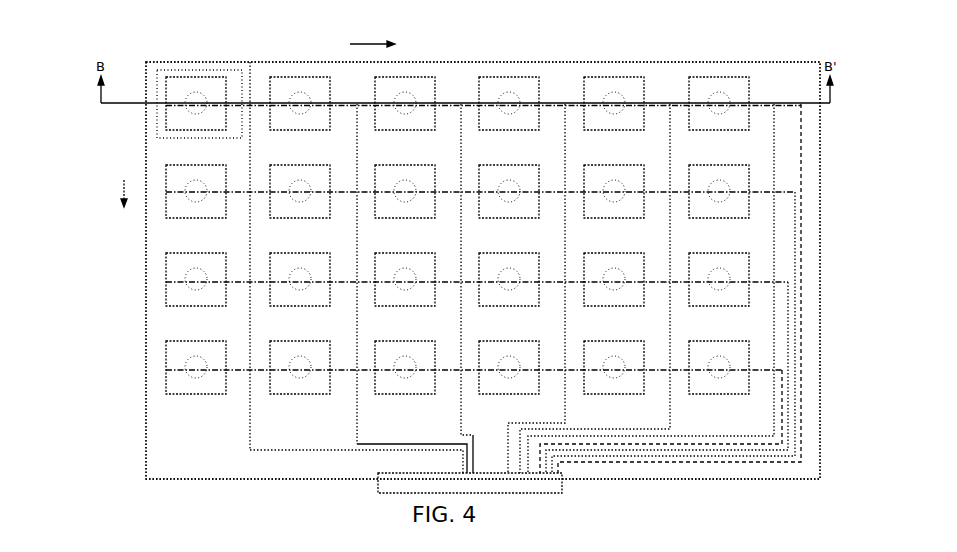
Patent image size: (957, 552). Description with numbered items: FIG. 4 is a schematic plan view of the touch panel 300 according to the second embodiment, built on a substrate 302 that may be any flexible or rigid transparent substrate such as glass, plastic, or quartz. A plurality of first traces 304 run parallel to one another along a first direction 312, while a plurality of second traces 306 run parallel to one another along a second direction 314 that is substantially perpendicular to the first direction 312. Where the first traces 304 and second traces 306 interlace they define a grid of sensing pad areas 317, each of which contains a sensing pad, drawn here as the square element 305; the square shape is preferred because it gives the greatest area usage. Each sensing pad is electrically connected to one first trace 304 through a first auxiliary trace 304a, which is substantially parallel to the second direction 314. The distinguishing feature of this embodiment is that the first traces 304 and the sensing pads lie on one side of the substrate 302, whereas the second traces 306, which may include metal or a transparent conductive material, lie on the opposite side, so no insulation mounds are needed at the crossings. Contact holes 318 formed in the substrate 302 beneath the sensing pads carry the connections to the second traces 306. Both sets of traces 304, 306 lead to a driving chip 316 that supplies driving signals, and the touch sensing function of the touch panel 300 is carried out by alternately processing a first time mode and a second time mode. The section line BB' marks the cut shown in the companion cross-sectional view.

The touch panel 300 is at (103, 42).
The substrate 302 is at (166, 62).
The first traces 304 is at (250, 437).
The first auxiliary trace 304a is at (245, 75).
The pixel electrode 305 is at (172, 96).
The second traces 306 is at (801, 100).
The first direction 312 is at (112, 185).
The second direction 314 is at (372, 34).
The driving chip 316 is at (566, 484).
The sensing pad area 317 is at (203, 70).
The contact holes 318 is at (165, 107).